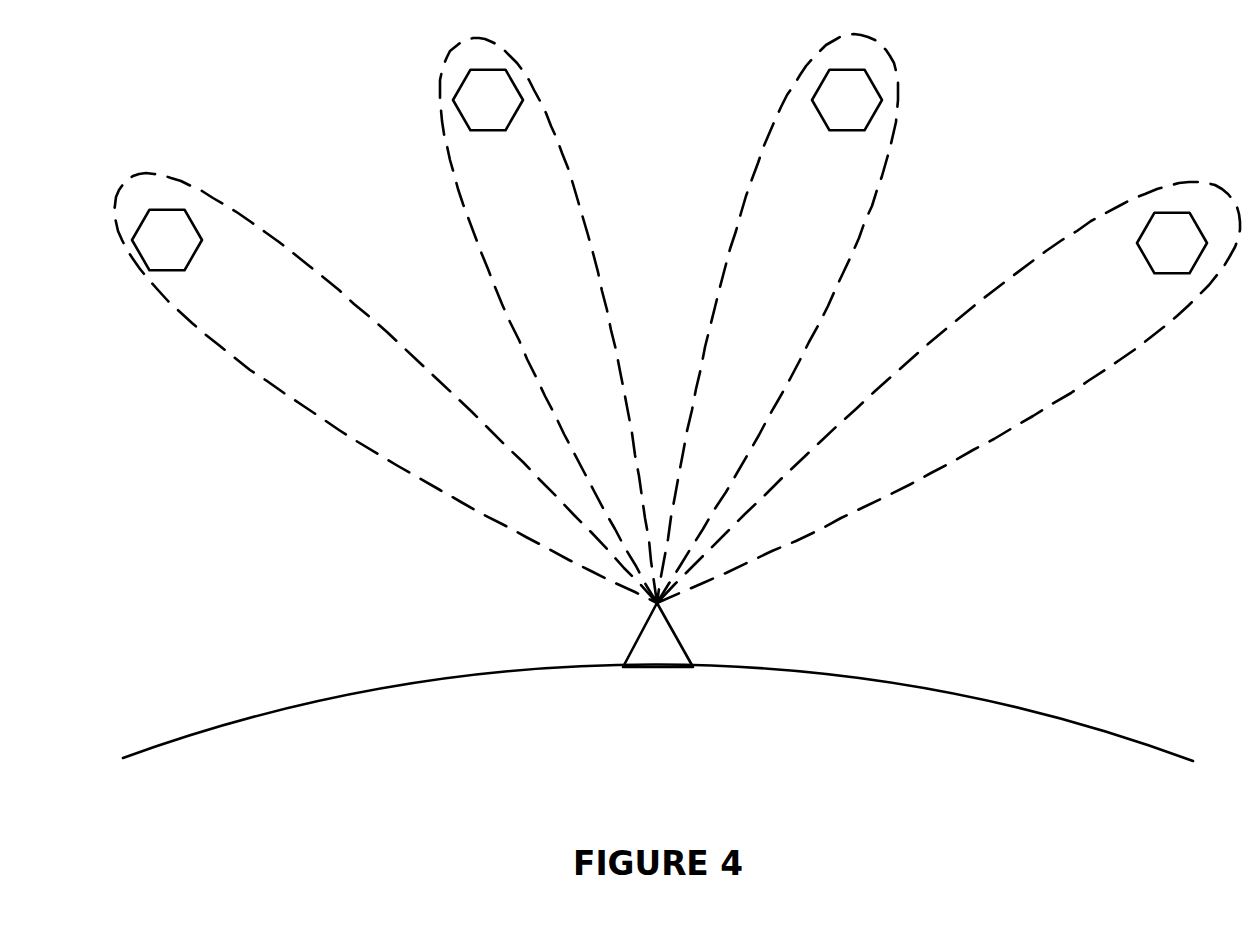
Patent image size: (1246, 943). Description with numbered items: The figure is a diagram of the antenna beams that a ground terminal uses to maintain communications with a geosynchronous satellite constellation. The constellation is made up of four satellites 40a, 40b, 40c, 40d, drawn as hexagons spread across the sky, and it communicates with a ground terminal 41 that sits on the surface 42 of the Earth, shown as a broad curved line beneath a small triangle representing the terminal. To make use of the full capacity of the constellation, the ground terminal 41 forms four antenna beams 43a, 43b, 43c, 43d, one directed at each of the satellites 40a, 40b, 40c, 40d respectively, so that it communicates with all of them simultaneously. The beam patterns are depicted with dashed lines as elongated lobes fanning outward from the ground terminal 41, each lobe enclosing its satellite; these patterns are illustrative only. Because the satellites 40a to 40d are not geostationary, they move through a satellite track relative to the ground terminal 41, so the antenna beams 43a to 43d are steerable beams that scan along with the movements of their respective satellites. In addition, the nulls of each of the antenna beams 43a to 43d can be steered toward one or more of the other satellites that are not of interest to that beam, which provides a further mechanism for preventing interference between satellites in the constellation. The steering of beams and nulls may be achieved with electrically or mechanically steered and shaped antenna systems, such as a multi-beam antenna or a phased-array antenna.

The satellite 40a is at (195, 257).
The satellite 40b is at (493, 130).
The satellite 40c is at (837, 131).
The satellite 40d is at (1160, 274).
The ground terminal 41 is at (687, 650).
The surface of the Earth 42 is at (1137, 740).
The antenna beam 43a is at (300, 405).
The antenna beam 43b is at (453, 183).
The antenna beam 43c is at (773, 125).
The antenna beam 43d is at (1108, 368).